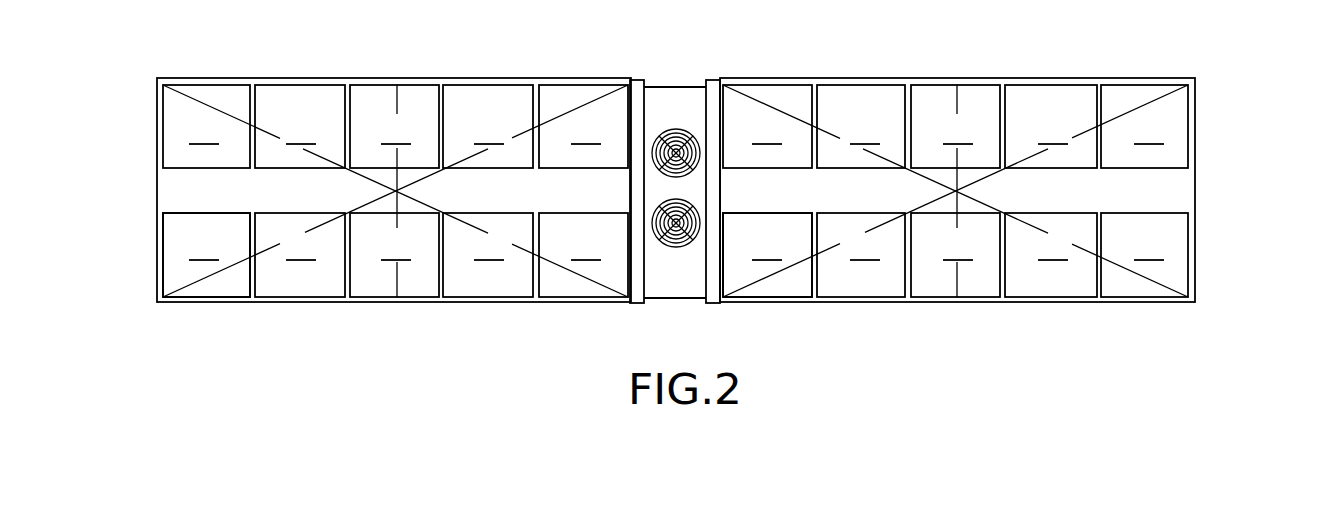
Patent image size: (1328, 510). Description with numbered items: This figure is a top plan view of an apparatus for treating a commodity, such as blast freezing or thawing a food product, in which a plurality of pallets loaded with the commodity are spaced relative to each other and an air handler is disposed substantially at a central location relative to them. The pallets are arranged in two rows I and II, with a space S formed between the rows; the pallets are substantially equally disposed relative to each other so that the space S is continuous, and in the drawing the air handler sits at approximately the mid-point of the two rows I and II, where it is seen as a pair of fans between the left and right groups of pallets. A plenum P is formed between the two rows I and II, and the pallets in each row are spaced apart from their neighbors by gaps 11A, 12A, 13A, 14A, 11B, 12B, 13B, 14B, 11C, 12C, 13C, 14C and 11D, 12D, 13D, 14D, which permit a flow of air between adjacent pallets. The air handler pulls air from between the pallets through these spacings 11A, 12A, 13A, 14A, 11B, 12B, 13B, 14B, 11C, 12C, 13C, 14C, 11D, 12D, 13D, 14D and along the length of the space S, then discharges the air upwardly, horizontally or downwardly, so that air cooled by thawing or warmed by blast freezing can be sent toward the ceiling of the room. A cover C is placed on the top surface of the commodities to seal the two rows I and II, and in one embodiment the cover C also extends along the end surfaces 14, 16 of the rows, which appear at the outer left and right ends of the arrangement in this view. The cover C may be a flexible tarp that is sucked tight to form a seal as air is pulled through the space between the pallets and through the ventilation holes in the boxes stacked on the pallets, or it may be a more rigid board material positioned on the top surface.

The end surface 14 is at (345, 193).
The end surface 16 is at (1006, 193).
The space between adjacent pallets 11A is at (256, 278).
The space between adjacent pallets 12A is at (351, 278).
The space between adjacent pallets 13A is at (444, 278).
The space between adjacent pallets 14A is at (540, 278).
The space between adjacent pallets 11B is at (256, 104).
The space between adjacent pallets 12B is at (351, 104).
The space between adjacent pallets 13B is at (444, 104).
The space between adjacent pallets 14B is at (540, 104).
The space between adjacent pallets 11C is at (818, 278).
The space between adjacent pallets 12C is at (912, 278).
The space between adjacent pallets 13C is at (1006, 278).
The space between adjacent pallets 14C is at (1102, 278).
The space between adjacent pallets 11D is at (818, 104).
The space between adjacent pallets 12D is at (912, 104).
The space between adjacent pallets 13D is at (1006, 104).
The space between adjacent pallets 14D is at (1102, 104).
The cover C is at (196, 282).
The space S is at (205, 191).
The plenum P is at (540, 204).
The row of pallets I is at (125, 121).
The row of pallets II is at (130, 278).